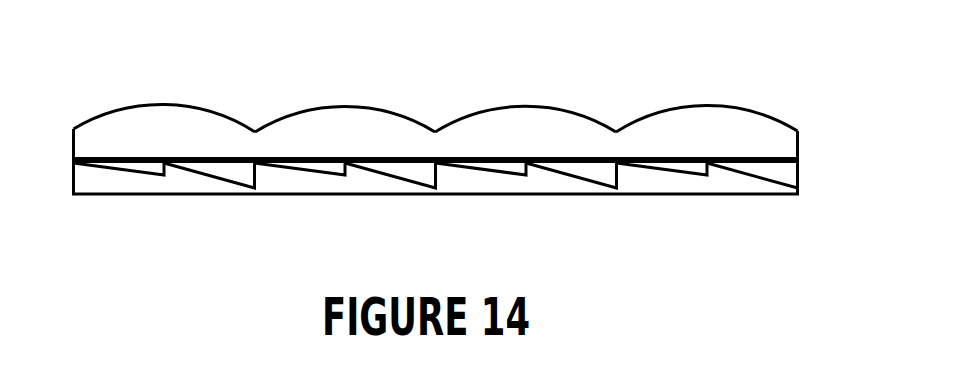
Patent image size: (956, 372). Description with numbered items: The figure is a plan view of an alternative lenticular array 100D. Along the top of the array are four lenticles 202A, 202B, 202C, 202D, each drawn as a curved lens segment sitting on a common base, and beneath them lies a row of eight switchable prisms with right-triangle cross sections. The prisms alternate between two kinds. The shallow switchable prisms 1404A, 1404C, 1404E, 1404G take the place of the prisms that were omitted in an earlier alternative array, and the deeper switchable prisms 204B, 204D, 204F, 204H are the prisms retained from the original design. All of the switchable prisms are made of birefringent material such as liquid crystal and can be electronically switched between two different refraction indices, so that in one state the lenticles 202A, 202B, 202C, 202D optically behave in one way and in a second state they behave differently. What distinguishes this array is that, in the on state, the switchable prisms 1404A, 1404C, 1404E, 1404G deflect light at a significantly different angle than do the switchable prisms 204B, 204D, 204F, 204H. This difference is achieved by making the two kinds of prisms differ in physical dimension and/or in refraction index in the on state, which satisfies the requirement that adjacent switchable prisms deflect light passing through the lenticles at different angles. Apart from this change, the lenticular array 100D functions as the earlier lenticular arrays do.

The lenticular array 100D is at (489, 51).
The lenticle 202A is at (160, 106).
The lenticle 202B is at (343, 106).
The lenticle 202C is at (522, 106).
The lenticle 202D is at (738, 88).
The switchable prism 1404A is at (129, 172).
The switchable prism 204B is at (208, 175).
The switchable prism 1404C is at (315, 171).
The switchable prism 204D is at (398, 178).
The switchable prism 1404E is at (495, 171).
The switchable prism 204F is at (575, 177).
The switchable prism 1404G is at (677, 171).
The switchable prism 204H is at (763, 179).